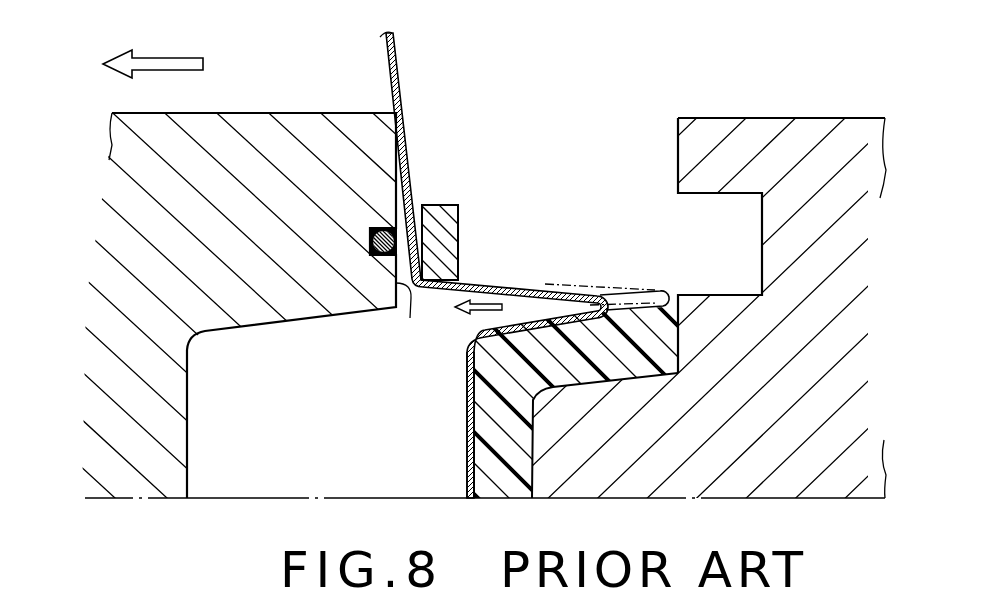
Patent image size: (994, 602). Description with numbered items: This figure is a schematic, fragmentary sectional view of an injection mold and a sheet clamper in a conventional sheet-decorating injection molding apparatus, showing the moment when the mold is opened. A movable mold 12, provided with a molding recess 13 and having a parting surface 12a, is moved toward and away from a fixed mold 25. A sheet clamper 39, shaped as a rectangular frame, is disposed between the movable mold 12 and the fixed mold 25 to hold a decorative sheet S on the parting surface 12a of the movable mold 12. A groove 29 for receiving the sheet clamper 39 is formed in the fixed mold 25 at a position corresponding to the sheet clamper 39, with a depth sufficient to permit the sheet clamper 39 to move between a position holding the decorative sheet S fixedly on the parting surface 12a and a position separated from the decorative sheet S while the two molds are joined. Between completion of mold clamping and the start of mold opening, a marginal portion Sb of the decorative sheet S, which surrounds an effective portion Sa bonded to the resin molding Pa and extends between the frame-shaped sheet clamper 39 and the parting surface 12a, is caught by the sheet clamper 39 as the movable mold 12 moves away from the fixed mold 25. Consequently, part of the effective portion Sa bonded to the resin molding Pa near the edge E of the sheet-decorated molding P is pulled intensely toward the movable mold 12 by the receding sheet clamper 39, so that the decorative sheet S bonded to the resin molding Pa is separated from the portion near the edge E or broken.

The movable mold 12 is at (277, 108).
The parting surface 12a is at (410, 318).
The molding recess 13 is at (188, 408).
The fixed mold 25 is at (803, 108).
The groove 29 is at (713, 196).
The sheet clamper 39 is at (443, 212).
The decorative sheet S is at (464, 251).
The effective portion Sa is at (466, 384).
The marginal portion Sb is at (406, 142).
The edge E is at (663, 300).
The sheet-decorated molding P is at (458, 433).
The resin molding Pa is at (467, 462).